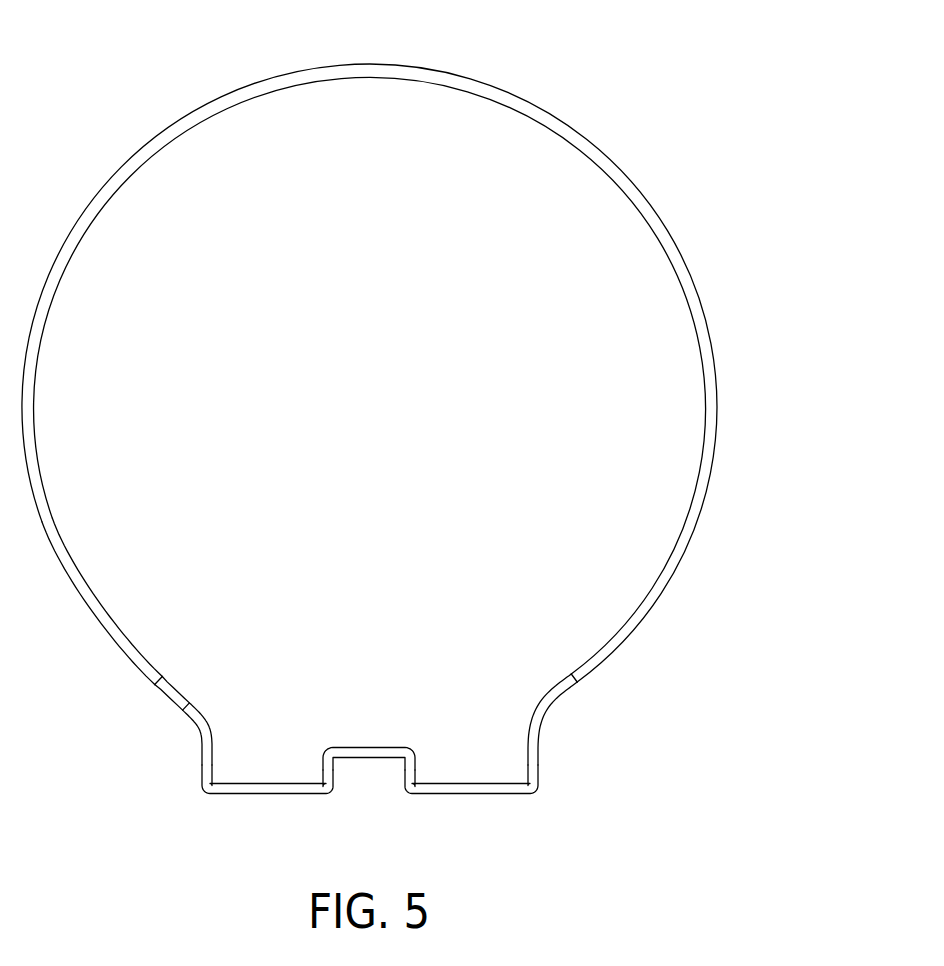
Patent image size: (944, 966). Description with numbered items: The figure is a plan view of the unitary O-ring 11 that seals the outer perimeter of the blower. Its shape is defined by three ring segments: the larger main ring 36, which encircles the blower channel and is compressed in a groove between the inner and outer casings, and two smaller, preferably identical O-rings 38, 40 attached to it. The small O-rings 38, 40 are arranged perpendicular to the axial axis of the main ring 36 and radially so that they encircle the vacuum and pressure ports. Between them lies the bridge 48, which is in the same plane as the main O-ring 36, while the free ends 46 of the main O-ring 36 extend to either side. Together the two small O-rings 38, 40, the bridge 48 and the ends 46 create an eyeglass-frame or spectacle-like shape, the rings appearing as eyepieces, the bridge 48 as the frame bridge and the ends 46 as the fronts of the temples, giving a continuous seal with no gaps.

The O-ring 11 is at (418, 450).
The main ring 36 is at (489, 86).
The smaller O-ring 38 is at (468, 795).
The smaller O-ring 40 is at (260, 795).
The ends of the main O-ring 46 is at (199, 785).
The bridge 48 is at (364, 759).